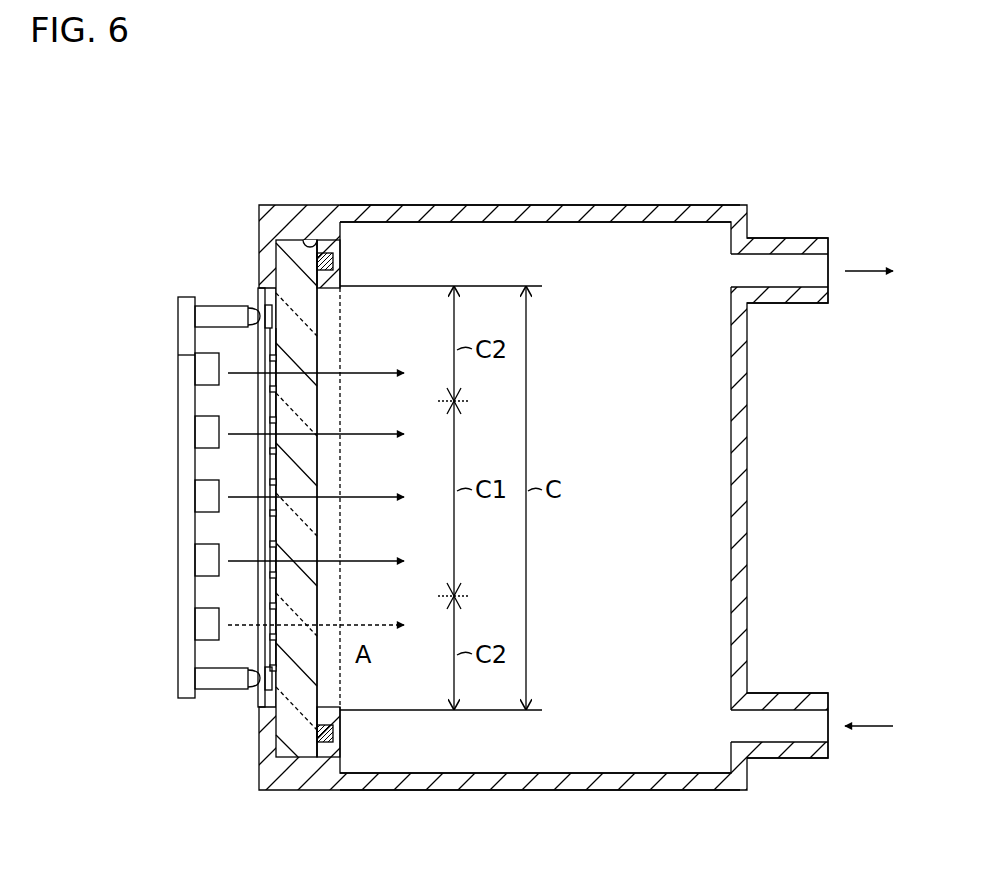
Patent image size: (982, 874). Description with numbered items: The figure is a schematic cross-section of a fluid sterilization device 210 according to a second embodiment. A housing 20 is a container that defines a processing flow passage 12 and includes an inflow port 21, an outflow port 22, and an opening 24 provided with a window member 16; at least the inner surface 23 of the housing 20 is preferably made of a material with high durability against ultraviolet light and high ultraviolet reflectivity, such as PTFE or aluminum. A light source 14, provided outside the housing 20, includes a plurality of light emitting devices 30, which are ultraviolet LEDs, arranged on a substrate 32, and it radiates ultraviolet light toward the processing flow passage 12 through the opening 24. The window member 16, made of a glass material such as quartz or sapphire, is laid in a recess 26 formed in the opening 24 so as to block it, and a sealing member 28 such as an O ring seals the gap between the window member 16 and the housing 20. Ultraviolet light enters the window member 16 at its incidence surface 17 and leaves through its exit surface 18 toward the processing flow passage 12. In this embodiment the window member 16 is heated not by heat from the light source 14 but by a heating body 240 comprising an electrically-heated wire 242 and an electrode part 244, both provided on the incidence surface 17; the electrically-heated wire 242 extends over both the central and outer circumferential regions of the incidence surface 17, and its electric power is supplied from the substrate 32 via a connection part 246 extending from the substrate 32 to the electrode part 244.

The fluid sterilization device 210 is at (757, 152).
The processing flow passage 12 is at (645, 562).
The light source 14 is at (134, 496).
The window member 16 is at (288, 245).
The incidence surface 17 is at (258, 292).
The exit surface 18 is at (320, 345).
The housing 20 is at (581, 212).
The inflow port 21 is at (780, 695).
The outflow port 22 is at (788, 302).
The inner surface 23 is at (597, 775).
The opening 24 is at (335, 290).
The recess 26 is at (318, 240).
The sealing member 28 is at (334, 262).
The light emitting devices 30 is at (203, 560).
The substrate 32 is at (183, 356).
The heating body 240 is at (254, 589).
The electrically-heated wire 242 is at (272, 636).
The electrode part 244 is at (264, 688).
The connection part 246 is at (220, 683).